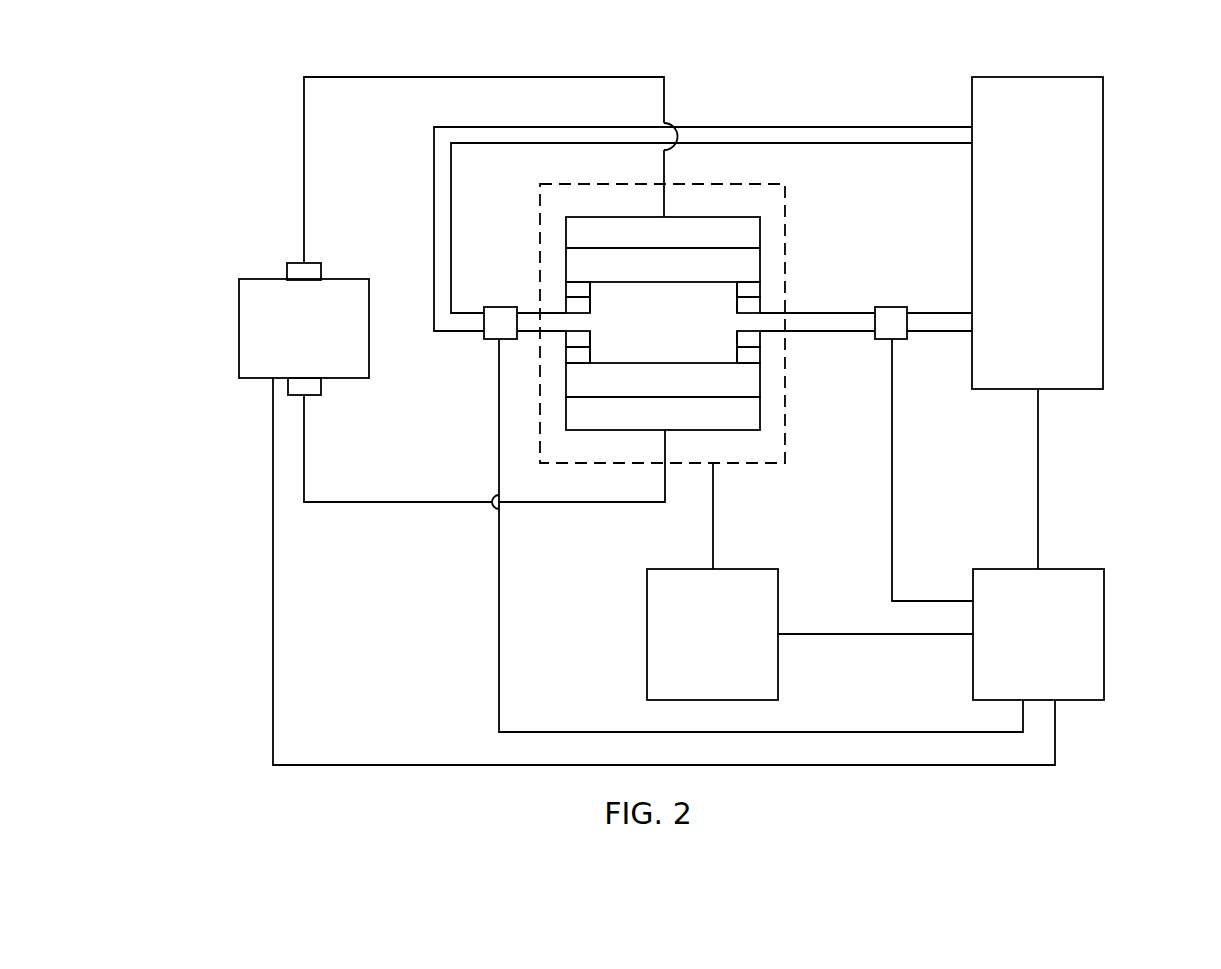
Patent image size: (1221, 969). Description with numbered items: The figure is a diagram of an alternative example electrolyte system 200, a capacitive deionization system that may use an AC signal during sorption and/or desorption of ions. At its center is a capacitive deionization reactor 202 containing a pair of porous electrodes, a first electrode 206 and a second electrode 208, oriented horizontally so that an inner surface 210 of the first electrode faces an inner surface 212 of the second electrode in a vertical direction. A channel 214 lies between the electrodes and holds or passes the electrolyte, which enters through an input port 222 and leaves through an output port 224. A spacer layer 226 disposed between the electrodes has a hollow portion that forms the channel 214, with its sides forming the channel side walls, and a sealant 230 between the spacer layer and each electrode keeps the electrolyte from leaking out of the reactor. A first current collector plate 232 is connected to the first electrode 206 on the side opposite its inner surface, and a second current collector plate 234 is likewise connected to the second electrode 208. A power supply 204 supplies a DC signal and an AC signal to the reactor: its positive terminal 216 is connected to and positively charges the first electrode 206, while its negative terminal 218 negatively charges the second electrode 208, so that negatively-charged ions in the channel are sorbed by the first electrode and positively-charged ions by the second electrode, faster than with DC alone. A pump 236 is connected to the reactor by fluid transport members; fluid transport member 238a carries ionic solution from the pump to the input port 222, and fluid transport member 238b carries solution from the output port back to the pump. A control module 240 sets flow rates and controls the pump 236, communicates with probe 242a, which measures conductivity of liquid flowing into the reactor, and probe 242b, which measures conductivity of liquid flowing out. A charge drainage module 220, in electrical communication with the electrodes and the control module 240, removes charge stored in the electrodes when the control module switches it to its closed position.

The electrolyte system 200 is at (263, 72).
The capacitive deionization reactor 202 is at (789, 207).
The power supply 204 is at (239, 323).
The first electrode 206 is at (582, 265).
The second electrode 208 is at (745, 380).
The inner surface 210 is at (728, 253).
The inner surface 212 is at (737, 395).
The channel 214 is at (623, 322).
The positive terminal 216 is at (303, 272).
The negative terminal 218 is at (312, 387).
The charge drainage module 220 is at (647, 630).
The input port 222 is at (573, 322).
The output port 224 is at (752, 322).
The spacer layer 226 is at (752, 308).
The sealant 230 is at (573, 290).
The first current collector plate 232 is at (583, 233).
The second current collector plate 234 is at (745, 412).
The pump 236 is at (1038, 77).
The fluid transport member 238a is at (877, 130).
The fluid transport member 238b is at (822, 323).
The control module 240 is at (1105, 635).
The probe 242a is at (502, 322).
The probe 242b is at (892, 317).